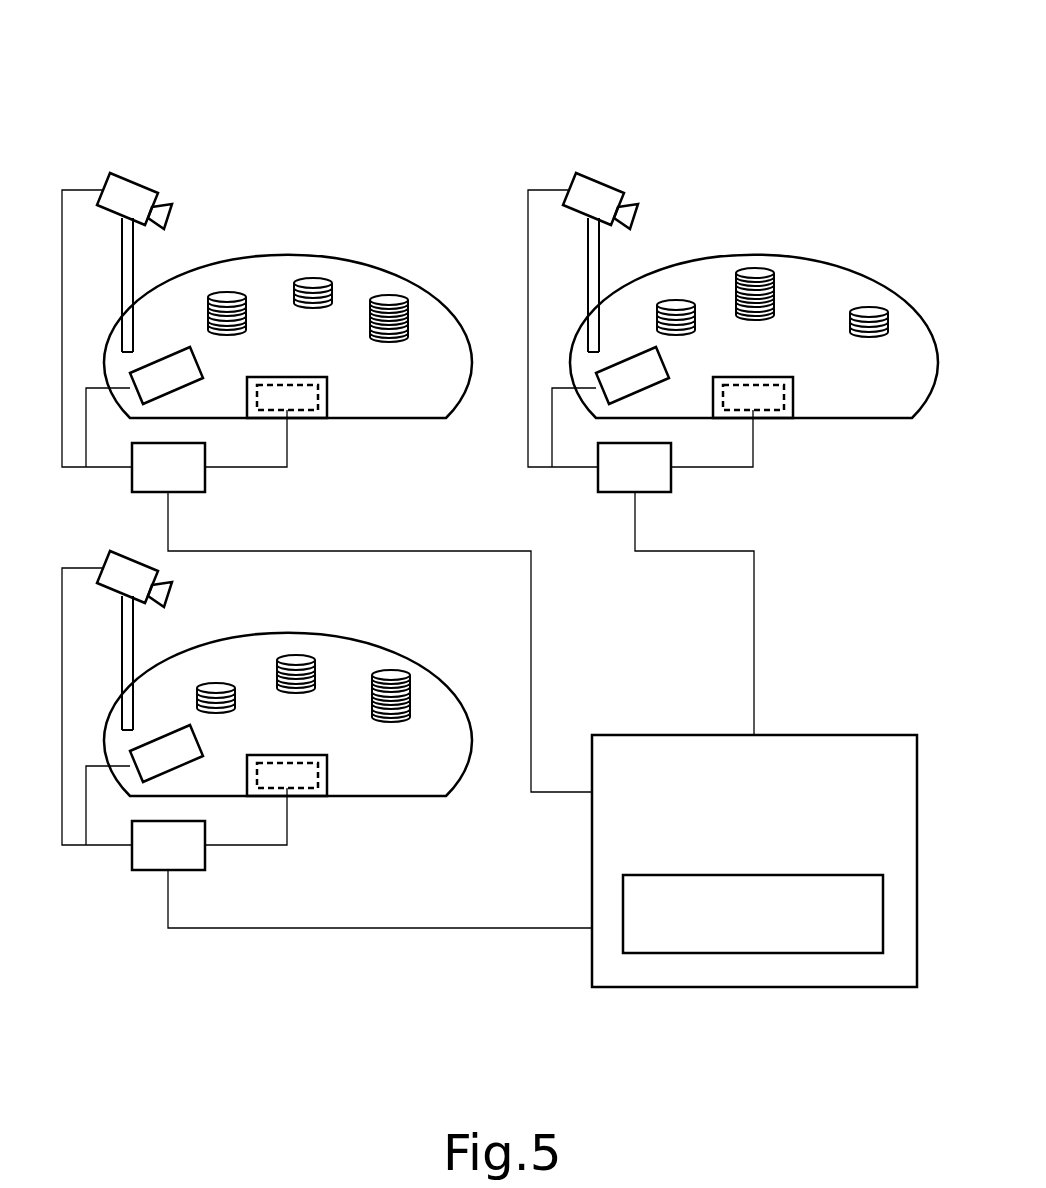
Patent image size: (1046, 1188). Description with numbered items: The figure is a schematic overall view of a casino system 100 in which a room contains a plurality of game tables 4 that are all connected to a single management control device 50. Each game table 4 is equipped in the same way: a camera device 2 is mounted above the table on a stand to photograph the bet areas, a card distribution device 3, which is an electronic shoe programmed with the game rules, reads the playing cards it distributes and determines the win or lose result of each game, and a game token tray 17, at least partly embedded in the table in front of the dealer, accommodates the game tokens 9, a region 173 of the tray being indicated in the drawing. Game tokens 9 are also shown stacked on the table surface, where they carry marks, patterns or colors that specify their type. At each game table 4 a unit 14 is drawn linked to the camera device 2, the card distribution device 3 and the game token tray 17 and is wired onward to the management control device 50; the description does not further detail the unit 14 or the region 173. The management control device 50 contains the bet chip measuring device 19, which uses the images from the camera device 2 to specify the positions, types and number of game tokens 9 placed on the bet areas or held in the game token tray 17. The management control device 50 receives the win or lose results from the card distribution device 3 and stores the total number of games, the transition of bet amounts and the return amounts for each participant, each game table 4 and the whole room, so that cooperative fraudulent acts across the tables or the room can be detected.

The game management system 100 is at (487, 86).
The camera device 2 is at (367, 432).
The game table 4 is at (521, 500).
The card distribution device 3 is at (418, 569).
The game token 9 is at (208, 314).
The game token tray 17 is at (552, 584).
The chip storage area 173 is at (518, 557).
The control device 14 is at (432, 650).
The management control device 50 is at (835, 735).
The bet chip measuring device 19 is at (755, 874).